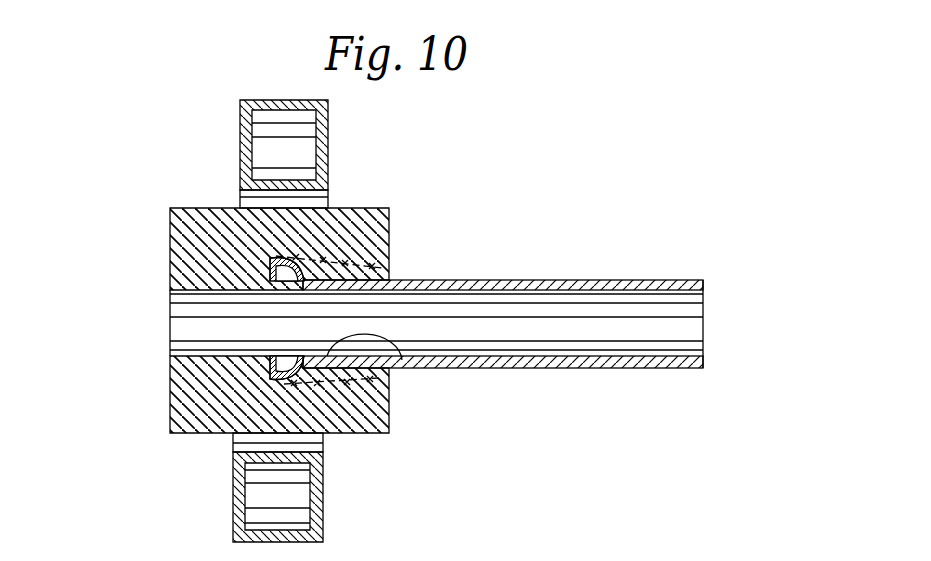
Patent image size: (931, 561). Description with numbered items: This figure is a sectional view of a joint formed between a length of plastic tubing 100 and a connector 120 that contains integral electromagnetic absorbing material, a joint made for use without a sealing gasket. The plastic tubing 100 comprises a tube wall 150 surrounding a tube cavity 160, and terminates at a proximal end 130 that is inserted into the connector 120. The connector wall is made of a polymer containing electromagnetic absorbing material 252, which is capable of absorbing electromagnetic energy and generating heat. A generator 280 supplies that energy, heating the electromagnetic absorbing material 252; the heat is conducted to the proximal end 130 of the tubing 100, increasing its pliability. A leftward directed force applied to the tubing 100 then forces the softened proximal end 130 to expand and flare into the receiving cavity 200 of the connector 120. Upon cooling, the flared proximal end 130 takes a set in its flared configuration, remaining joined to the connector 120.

The plastic tubing 100 is at (418, 321).
The connector 120 is at (188, 208).
The proximal end 130 is at (404, 366).
The tube wall 150 is at (686, 368).
The tube cavity 160 is at (592, 337).
The receiver cavity 200 is at (272, 358).
The electromagnetic absorbing material 252 is at (392, 238).
The generator 280 is at (252, 131).